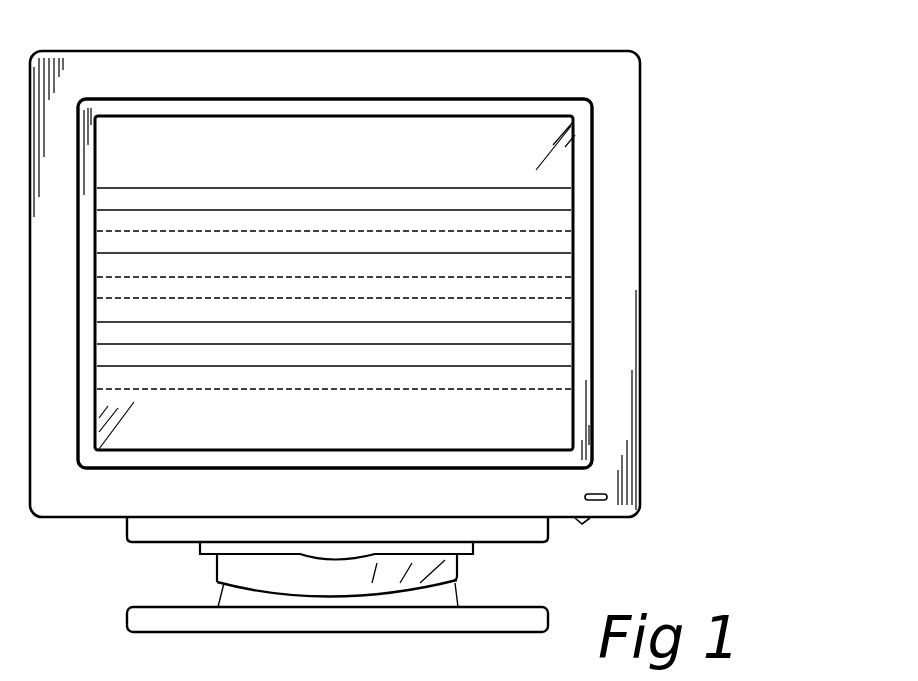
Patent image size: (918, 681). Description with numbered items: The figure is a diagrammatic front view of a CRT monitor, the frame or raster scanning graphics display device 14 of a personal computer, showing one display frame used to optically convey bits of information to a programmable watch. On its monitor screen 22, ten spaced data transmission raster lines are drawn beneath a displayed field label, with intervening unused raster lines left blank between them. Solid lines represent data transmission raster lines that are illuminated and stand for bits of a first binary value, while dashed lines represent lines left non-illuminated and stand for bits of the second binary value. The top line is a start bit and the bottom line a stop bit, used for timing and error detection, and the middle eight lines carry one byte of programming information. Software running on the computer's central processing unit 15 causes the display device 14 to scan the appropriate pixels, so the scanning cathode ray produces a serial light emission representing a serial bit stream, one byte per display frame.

The graphics display device 14 is at (560, 505).
The central processing unit 15 is at (84, 677).
The monitor screen 22 is at (517, 133).